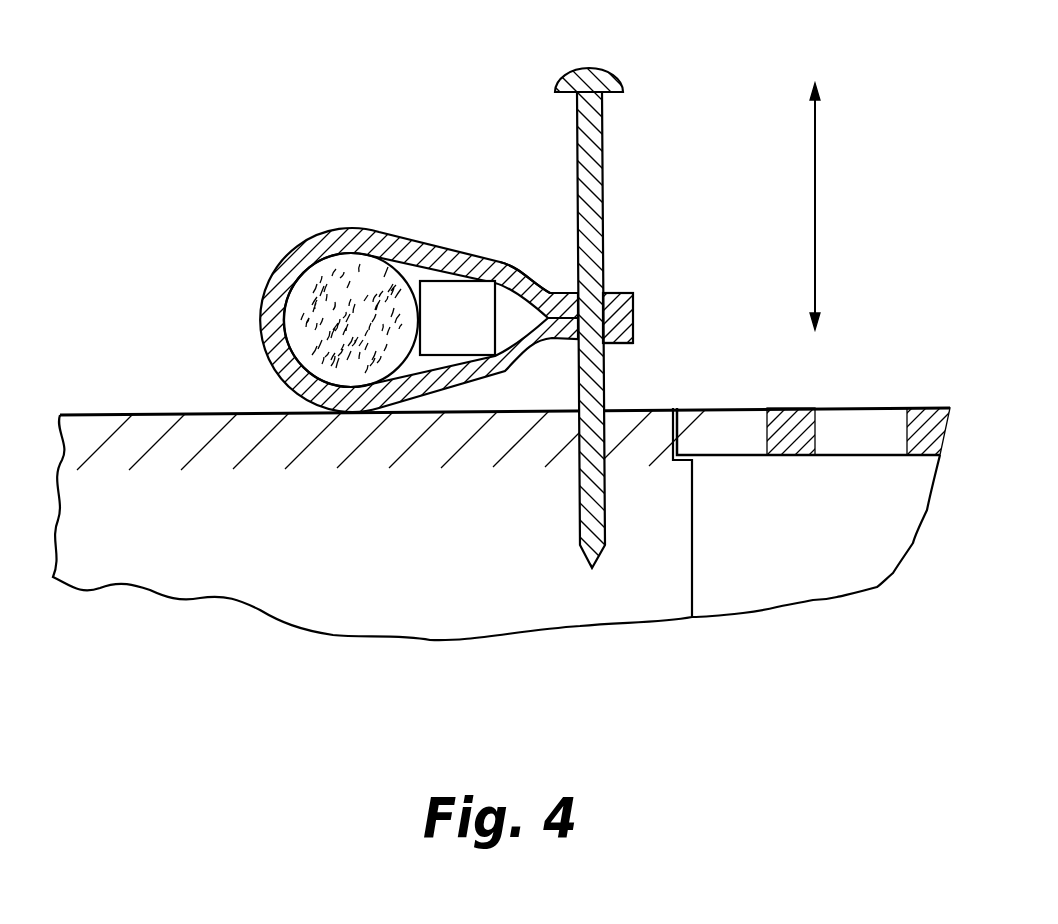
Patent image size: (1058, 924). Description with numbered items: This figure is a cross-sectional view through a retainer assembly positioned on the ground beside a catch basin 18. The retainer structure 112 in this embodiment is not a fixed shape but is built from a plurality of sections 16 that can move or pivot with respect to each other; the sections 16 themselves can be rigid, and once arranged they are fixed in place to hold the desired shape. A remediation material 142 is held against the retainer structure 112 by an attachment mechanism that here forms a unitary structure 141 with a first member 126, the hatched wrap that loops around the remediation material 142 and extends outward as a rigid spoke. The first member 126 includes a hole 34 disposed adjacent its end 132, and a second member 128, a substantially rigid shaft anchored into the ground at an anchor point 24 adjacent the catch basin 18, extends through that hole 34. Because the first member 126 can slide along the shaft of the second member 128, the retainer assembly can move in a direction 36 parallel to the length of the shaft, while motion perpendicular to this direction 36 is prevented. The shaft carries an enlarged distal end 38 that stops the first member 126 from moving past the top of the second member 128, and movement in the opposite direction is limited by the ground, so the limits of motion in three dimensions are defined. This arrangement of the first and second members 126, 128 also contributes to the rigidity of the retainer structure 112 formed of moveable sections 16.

The sections 16 is at (433, 280).
The catch basin 18 is at (872, 432).
The anchor points 24 is at (607, 407).
The hole 34 is at (608, 350).
The direction 36 is at (815, 178).
The enlarged distal end 38 is at (593, 68).
The retainer structure 112 is at (498, 310).
The first member 126 is at (544, 292).
The second member 128 is at (563, 300).
The end 132 is at (616, 293).
The unitary structure 141 is at (317, 250).
The remediation material 142 is at (305, 313).